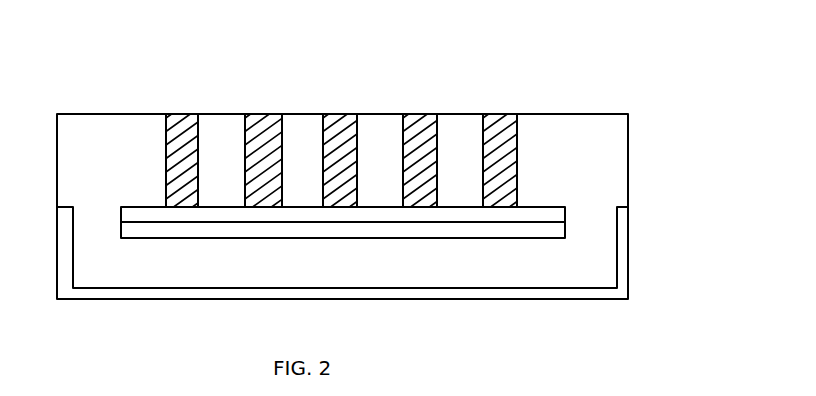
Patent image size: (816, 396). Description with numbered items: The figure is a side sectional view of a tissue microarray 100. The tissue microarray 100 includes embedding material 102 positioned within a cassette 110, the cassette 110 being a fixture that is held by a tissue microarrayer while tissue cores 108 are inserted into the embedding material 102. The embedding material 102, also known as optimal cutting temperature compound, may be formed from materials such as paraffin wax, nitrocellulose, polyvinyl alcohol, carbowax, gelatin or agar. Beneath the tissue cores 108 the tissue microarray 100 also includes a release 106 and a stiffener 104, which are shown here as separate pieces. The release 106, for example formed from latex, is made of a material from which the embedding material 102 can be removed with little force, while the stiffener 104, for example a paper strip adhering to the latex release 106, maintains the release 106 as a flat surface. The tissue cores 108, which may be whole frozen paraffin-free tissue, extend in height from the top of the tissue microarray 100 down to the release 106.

The tissue microarray 100 is at (598, 62).
The embedding material 102 is at (630, 150).
The stiffener 104 is at (540, 239).
The release 106 is at (565, 212).
The tissue cores 108 is at (518, 113).
The cassette 110 is at (630, 258).